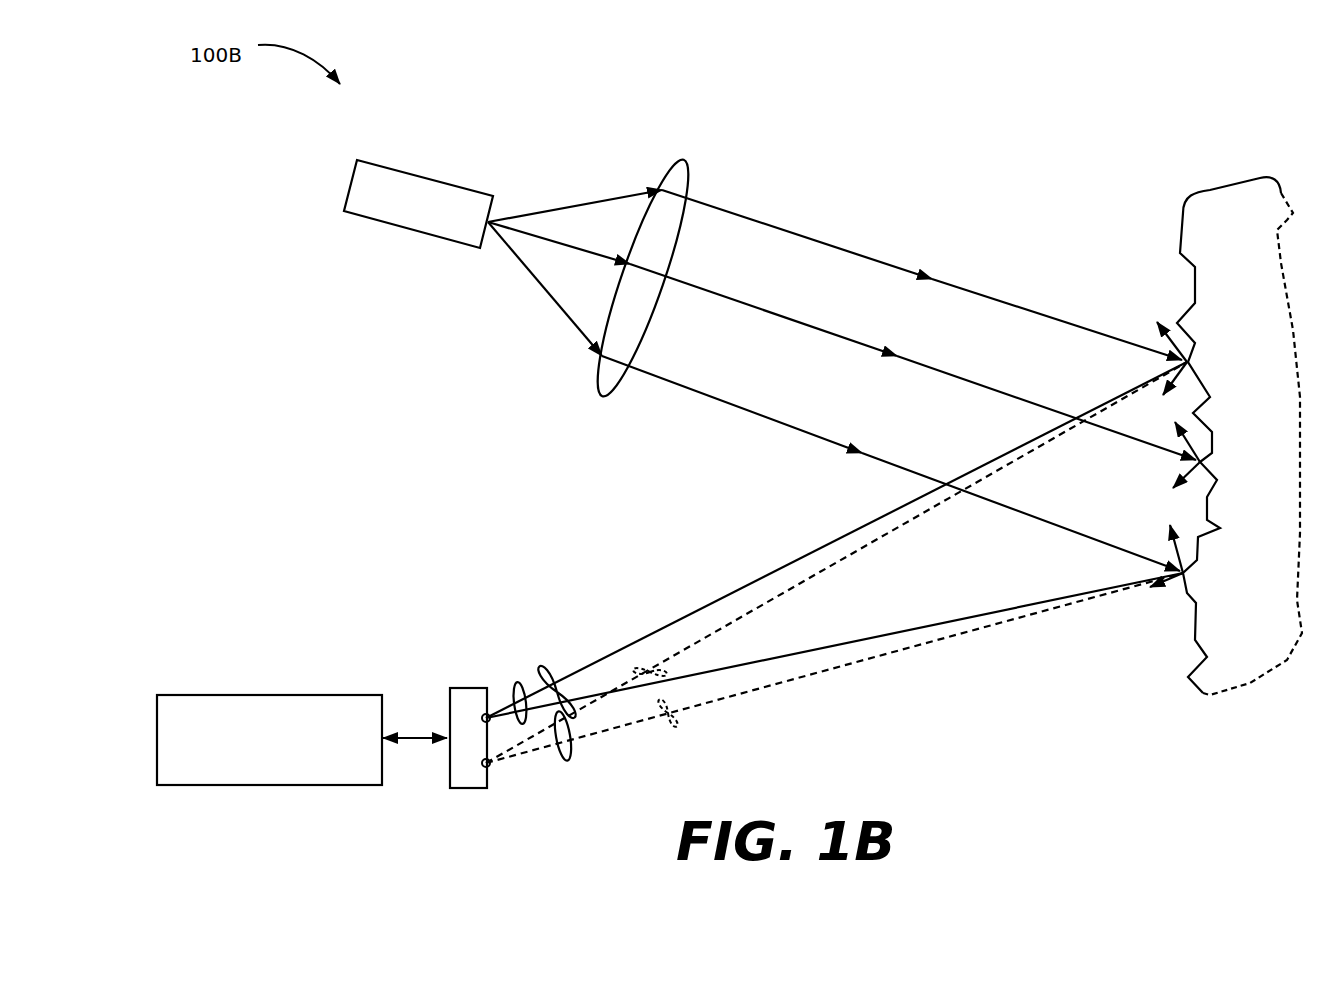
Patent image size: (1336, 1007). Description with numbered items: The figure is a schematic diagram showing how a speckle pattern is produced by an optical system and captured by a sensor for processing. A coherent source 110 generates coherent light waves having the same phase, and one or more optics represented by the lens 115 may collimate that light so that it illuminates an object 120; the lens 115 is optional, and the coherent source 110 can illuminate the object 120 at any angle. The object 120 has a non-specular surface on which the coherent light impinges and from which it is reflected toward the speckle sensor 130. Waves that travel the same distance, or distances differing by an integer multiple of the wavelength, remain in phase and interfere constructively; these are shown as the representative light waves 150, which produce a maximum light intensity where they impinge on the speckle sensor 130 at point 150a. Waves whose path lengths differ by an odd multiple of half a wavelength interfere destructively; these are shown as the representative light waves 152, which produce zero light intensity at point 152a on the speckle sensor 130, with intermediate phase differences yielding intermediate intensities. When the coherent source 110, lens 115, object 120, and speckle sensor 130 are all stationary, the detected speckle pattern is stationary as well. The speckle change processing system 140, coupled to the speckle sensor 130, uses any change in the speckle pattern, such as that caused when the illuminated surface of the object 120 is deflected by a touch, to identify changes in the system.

The coherent source 110 is at (353, 181).
The lens 115 is at (694, 172).
The object 120 is at (1230, 208).
The speckle sensor 130 is at (472, 688).
The speckle change processing system 140 is at (283, 697).
The light waves 150 is at (515, 690).
The point 150a is at (487, 714).
The light waves 152 is at (565, 757).
The point 152a is at (489, 768).